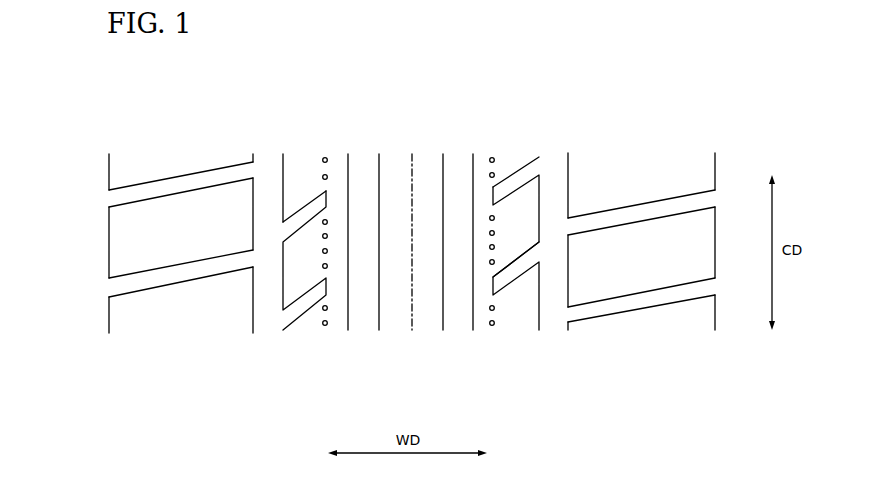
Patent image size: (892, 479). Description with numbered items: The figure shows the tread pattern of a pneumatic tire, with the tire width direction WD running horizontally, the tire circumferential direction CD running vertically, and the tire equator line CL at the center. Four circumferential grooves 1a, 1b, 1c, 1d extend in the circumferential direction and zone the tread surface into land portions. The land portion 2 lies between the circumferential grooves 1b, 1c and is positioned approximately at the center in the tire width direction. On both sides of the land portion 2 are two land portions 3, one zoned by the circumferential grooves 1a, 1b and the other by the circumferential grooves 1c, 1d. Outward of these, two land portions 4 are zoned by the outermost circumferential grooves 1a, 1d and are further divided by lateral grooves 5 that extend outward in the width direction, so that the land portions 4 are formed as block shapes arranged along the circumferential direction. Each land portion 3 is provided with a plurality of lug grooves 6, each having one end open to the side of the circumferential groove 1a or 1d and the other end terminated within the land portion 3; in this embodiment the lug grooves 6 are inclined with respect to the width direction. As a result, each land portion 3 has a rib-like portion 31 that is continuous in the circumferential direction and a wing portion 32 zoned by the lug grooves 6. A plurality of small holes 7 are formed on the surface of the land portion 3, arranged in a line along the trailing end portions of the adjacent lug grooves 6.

The circumferential groove 1a is at (263, 143).
The circumferential groove 1b is at (362, 143).
The circumferential groove 1c is at (455, 143).
The circumferential groove 1d is at (548, 143).
The land portion 2 is at (408, 356).
The land portion 3 is at (310, 356).
The land portion 4 is at (173, 356).
The lateral groove 5 is at (118, 197).
The lug groove 6 is at (312, 208).
The small hole 7 is at (494, 265).
The rib-like portion 31 is at (485, 328).
The wing portion 32 is at (518, 245).